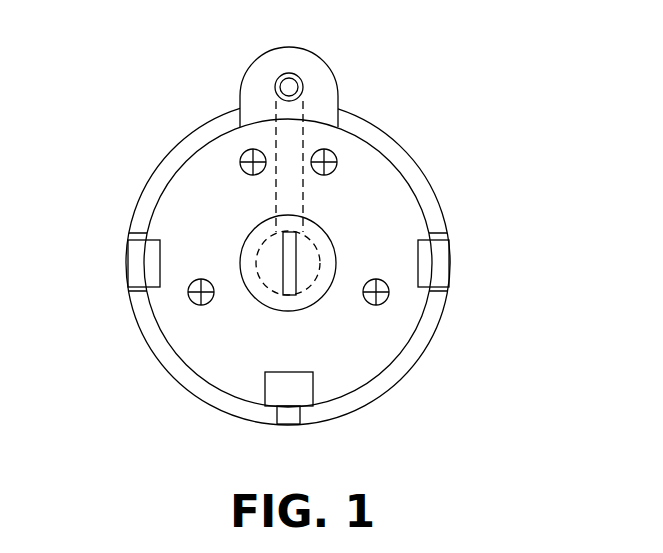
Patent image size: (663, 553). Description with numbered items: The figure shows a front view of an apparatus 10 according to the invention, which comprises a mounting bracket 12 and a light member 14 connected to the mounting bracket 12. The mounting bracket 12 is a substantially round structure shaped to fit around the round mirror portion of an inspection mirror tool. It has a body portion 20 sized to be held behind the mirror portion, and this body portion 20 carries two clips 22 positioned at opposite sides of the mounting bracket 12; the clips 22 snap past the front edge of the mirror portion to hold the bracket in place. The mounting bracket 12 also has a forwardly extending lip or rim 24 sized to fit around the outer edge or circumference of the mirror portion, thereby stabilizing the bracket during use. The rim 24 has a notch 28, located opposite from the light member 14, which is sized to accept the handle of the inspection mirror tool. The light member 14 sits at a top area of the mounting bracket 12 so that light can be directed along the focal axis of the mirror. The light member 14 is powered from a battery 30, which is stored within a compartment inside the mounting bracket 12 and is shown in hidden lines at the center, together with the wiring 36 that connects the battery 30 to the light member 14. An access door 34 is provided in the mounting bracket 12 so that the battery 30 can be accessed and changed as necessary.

The apparatus 10 is at (427, 145).
The mounting bracket 12 is at (440, 197).
The light member 14 is at (310, 55).
The body portion 20 is at (408, 322).
The clips 22 is at (143, 265).
The lip or rim 24 is at (363, 125).
The notch 28 is at (289, 420).
The battery 30 is at (317, 258).
The access door 34 is at (317, 298).
The wiring 36 is at (277, 190).